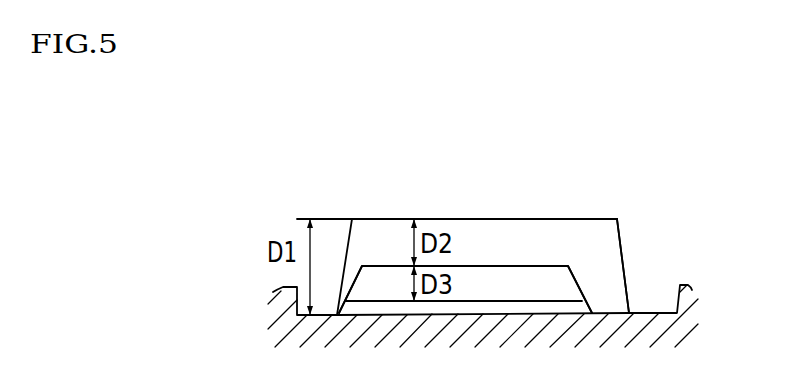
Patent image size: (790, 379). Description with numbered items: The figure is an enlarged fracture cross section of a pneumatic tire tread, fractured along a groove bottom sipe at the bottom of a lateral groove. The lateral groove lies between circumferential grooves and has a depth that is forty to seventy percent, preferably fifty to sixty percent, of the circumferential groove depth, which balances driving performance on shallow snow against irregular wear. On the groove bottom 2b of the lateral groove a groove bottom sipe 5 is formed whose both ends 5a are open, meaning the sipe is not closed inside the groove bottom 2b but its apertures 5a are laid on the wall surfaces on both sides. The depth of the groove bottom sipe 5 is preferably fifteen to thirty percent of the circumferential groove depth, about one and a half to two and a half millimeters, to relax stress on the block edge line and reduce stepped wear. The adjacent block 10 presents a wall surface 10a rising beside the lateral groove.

The groove bottom 2b is at (555, 265).
The groove bottom sipe 5 is at (568, 290).
The ends of groove bottom sipe 5a is at (358, 273).
The block 10 is at (607, 219).
The wall surface of block 10a is at (620, 232).